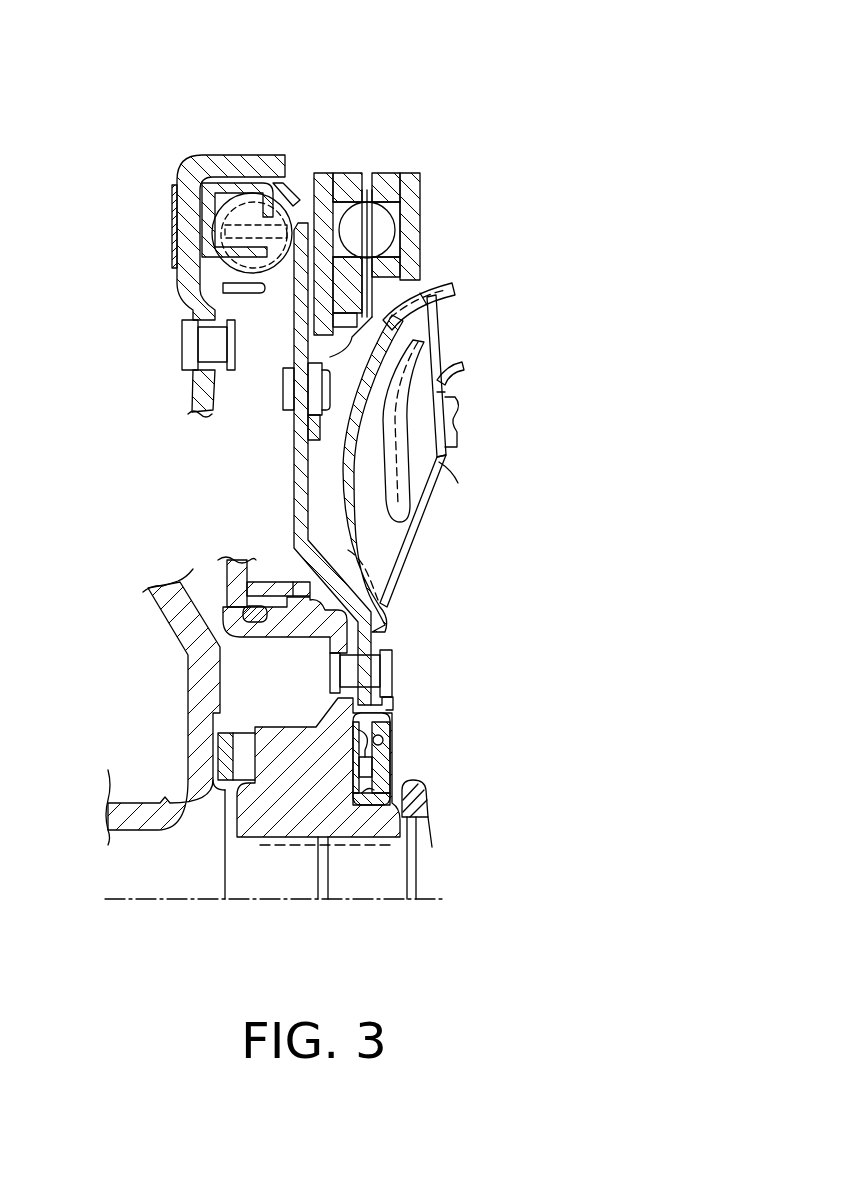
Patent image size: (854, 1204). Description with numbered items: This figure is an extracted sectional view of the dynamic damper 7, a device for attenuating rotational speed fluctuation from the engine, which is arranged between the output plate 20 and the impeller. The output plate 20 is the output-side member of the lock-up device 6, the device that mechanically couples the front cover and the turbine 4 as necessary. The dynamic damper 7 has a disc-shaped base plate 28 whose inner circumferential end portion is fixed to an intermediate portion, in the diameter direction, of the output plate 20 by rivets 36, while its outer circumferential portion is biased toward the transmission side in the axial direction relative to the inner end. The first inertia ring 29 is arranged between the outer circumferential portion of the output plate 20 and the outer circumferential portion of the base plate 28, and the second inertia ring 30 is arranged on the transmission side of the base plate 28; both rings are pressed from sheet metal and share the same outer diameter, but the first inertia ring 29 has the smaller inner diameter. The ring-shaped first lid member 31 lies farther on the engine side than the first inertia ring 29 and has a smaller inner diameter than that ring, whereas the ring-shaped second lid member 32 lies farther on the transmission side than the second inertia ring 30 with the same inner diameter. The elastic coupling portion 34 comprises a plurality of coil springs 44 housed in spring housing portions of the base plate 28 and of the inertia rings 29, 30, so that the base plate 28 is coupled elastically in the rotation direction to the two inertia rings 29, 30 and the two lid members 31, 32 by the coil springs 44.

The turbine 4 is at (433, 532).
The lock-up device 6 is at (160, 287).
The dynamic damper 7 is at (446, 149).
The output plate 20 is at (303, 483).
The base plate 28 is at (355, 330).
The first inertia ring 29 is at (349, 173).
The second inertia ring 30 is at (398, 173).
The first lid member 31 is at (320, 173).
The second lid member 32 is at (390, 203).
The elastic coupling portion 34 is at (418, 173).
The rivets 36 is at (288, 392).
The coil springs 44 is at (387, 222).